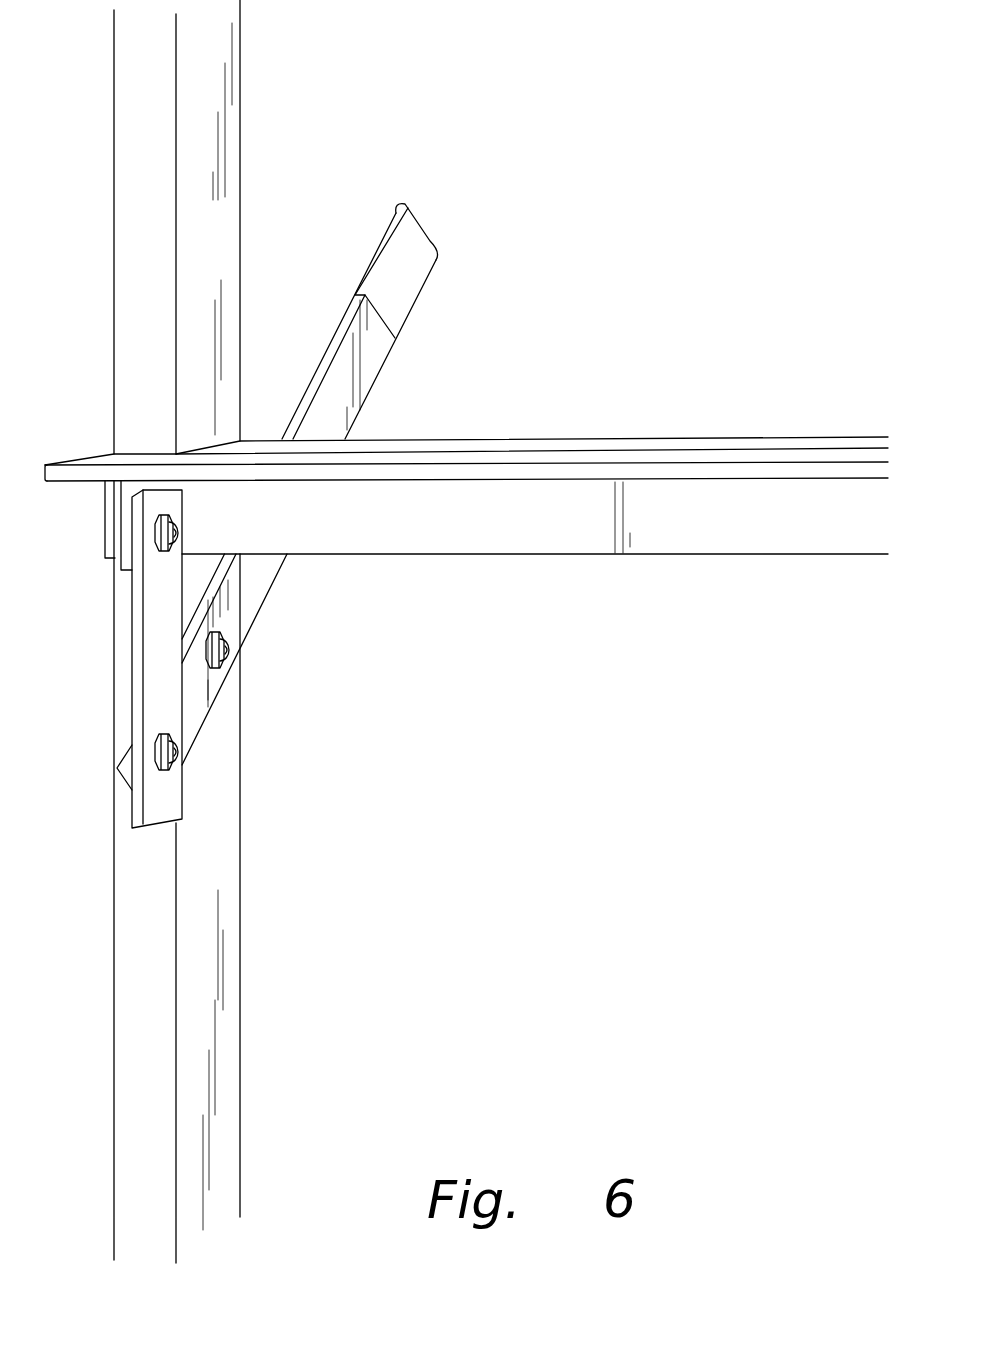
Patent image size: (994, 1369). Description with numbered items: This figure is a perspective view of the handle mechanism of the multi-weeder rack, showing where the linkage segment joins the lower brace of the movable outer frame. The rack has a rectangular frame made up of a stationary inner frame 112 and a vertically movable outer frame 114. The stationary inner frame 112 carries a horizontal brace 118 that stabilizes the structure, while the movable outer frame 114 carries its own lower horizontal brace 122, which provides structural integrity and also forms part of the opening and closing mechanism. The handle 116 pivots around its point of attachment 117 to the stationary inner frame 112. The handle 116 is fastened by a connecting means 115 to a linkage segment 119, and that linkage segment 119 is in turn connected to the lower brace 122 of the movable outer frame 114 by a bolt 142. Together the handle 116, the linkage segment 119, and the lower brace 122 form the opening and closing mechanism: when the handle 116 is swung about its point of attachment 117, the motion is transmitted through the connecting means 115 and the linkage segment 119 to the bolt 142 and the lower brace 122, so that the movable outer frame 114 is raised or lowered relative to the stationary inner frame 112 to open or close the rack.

The stationary inner frame 112 is at (233, 928).
The vertically movable outer frame 114 is at (133, 378).
The handle mechanism 116 is at (415, 280).
The horizontal brace 118 is at (553, 440).
The lower horizontal brace 122 is at (750, 548).
The linkage segment 119 is at (156, 656).
The bolt 142 is at (165, 552).
The point of attachment 117 is at (237, 648).
The connecting means 115 is at (182, 760).